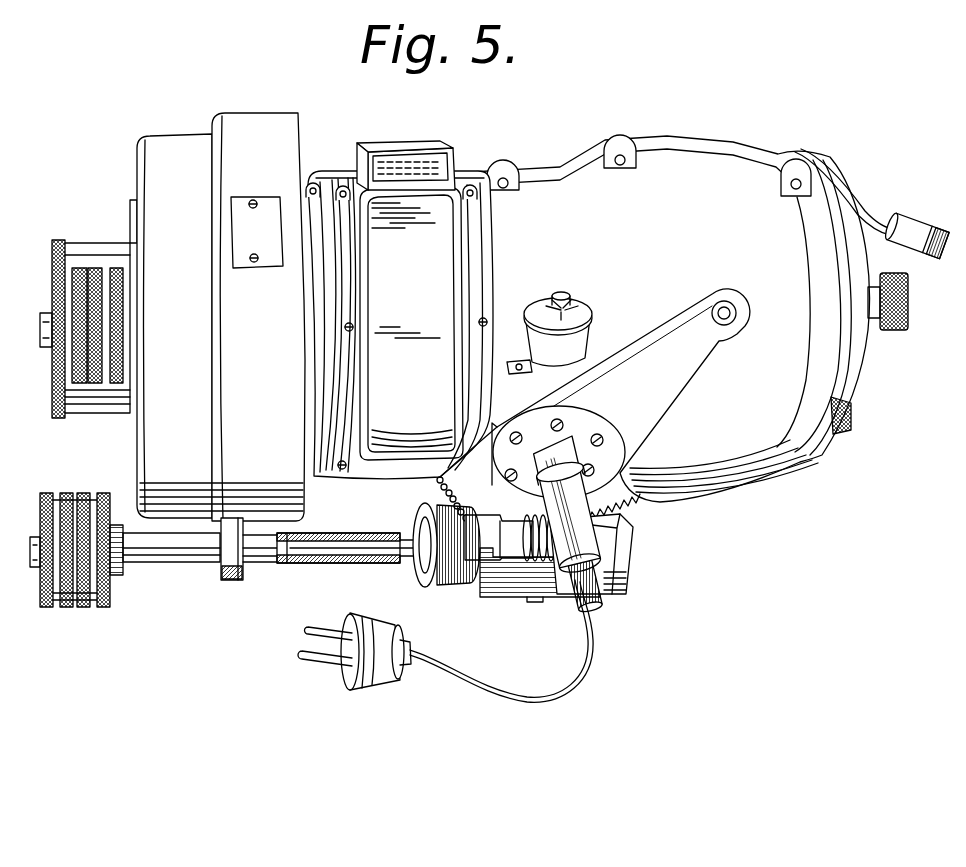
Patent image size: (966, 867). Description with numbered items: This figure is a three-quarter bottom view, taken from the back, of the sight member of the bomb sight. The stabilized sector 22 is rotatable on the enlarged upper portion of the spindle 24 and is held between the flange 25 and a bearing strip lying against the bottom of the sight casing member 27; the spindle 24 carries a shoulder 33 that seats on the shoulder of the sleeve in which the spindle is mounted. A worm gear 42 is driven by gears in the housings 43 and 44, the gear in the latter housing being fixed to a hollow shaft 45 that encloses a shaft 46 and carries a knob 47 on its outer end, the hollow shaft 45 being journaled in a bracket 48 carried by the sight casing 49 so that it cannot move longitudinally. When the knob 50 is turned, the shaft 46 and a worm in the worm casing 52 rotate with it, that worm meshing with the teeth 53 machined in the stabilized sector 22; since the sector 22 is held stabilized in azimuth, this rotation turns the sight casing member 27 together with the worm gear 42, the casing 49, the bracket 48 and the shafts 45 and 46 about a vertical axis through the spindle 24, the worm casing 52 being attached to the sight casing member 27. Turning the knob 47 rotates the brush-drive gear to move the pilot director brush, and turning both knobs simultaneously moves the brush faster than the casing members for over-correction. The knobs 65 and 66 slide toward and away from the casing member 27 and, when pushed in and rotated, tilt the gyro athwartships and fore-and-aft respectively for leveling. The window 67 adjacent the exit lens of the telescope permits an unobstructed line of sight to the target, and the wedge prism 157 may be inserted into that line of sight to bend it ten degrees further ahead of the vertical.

The wedge prism 157 is at (408, 156).
The window 67 is at (399, 325).
The sight casing member 27 is at (709, 318).
The stabilized sector 22 is at (595, 392).
The flange 25 is at (584, 421).
The shoulder 33 is at (554, 452).
The sight casing 49 is at (221, 317).
The teeth 53 is at (437, 484).
The worm gear 42 is at (524, 518).
The knob 66 is at (900, 302).
The athwartships leveling knob 65 is at (851, 416).
The spindle 24 is at (596, 533).
The worm casing 52 is at (612, 569).
The bracket 48 is at (239, 582).
The shaft 46 is at (310, 548).
The hollow shaft 45 is at (363, 561).
The housing 44 is at (446, 585).
The housing 43 is at (457, 583).
The knob 50 is at (55, 607).
The knob 47 is at (102, 607).